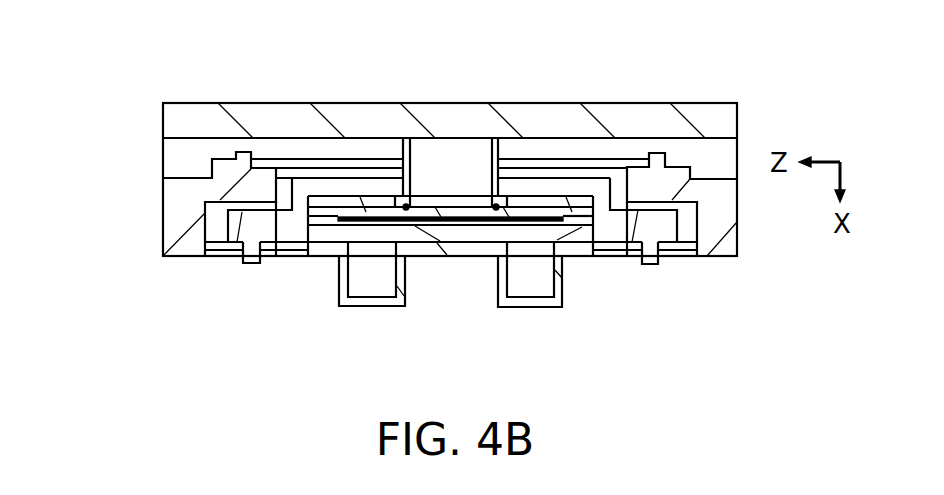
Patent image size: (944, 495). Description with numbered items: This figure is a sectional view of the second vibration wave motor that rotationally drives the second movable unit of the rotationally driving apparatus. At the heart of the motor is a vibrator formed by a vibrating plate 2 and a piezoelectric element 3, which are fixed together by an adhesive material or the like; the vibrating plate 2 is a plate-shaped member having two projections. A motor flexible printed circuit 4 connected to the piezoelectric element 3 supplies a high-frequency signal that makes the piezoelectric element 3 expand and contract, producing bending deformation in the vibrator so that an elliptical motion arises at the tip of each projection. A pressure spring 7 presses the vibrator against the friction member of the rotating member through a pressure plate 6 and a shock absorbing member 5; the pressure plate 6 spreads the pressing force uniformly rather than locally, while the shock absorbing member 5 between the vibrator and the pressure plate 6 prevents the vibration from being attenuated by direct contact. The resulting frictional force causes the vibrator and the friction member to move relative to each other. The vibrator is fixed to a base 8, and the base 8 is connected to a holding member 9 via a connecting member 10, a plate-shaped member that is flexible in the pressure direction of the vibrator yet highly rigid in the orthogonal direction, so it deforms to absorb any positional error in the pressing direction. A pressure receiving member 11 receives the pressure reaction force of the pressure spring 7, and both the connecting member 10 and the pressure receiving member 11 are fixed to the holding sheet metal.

The vibrating plate 2 is at (321, 250).
The piezoelectric element 3 is at (455, 232).
The motor flexible printed circuit 4 is at (419, 227).
The shock absorbing member 5 is at (580, 220).
The pressure plate 6 is at (365, 208).
The pressure spring 7 is at (457, 162).
The base 8 is at (560, 185).
The holding member 9 is at (218, 192).
The connecting member 10 is at (683, 165).
The pressure receiving member 11 is at (205, 117).